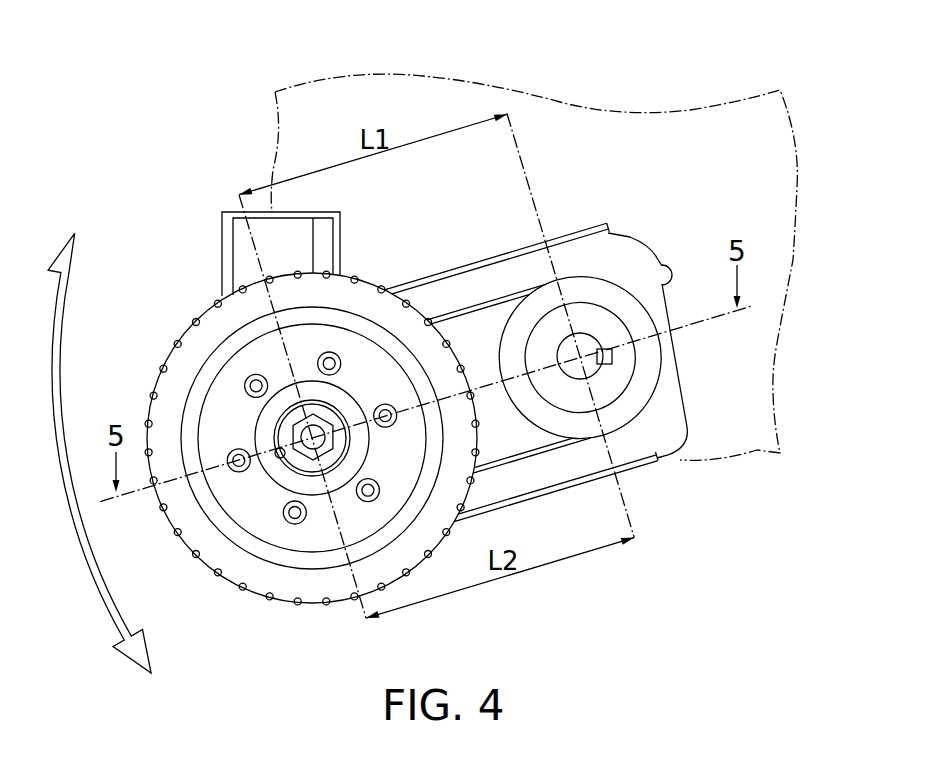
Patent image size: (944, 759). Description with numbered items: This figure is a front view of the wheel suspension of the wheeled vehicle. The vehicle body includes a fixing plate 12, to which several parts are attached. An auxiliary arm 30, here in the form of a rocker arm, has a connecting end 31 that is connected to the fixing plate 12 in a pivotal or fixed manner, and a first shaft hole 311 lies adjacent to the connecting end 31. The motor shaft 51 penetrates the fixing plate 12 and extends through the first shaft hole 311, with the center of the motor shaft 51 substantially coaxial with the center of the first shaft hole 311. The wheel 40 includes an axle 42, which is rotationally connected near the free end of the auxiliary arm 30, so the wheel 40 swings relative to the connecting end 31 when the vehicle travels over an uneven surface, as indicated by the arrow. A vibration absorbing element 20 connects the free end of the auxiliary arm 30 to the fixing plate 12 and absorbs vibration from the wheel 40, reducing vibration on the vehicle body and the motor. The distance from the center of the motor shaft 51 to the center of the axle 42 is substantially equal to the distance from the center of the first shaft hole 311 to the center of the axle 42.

The fixing plate 12 is at (783, 218).
The vibration absorbing element 20 is at (222, 245).
The auxiliary arm 30 is at (498, 265).
The connecting end 31 is at (601, 255).
The first shaft hole 311 is at (651, 403).
The wheel 40 is at (258, 598).
The axle 42 is at (312, 462).
The motor shaft 51 is at (607, 358).